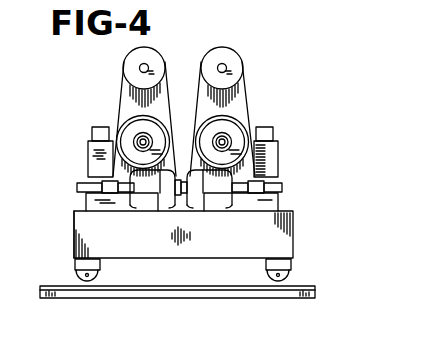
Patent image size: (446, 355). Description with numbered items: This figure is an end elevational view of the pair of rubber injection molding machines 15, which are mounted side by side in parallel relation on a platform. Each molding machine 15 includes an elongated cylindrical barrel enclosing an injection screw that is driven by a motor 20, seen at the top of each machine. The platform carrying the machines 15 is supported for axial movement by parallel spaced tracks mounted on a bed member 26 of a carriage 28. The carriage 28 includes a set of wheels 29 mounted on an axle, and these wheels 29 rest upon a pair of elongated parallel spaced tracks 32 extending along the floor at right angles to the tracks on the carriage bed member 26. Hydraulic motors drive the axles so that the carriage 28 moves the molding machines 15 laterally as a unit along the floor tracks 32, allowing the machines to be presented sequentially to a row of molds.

The rubber injection molding machine 15 is at (105, 109).
The motor 20 is at (204, 63).
The bed member 26 is at (80, 233).
The carriage 28 is at (299, 235).
The wheels 29 is at (75, 279).
The tracks 32 is at (128, 292).